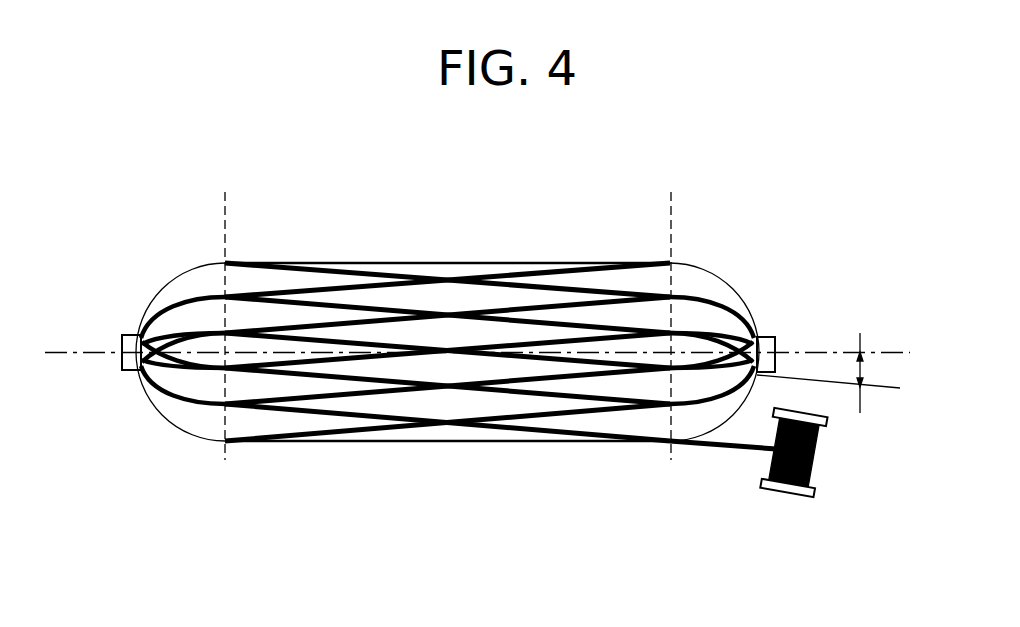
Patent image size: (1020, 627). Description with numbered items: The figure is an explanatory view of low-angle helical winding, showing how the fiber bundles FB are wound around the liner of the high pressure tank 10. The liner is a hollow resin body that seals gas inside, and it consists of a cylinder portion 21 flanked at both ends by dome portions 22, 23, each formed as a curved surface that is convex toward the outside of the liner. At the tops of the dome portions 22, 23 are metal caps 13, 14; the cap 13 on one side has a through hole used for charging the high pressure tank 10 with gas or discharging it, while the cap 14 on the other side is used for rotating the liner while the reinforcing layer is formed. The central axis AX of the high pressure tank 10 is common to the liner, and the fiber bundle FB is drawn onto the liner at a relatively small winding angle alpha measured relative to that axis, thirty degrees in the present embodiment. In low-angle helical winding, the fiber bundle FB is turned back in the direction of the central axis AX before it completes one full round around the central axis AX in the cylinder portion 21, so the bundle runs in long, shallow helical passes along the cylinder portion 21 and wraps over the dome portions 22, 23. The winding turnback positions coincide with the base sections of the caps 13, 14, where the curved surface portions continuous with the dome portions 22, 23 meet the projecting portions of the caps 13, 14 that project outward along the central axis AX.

The high pressure tank 10 is at (454, 311).
The cap 13 is at (108, 339).
The cap 14 is at (785, 340).
The cylinder portion 21 is at (670, 224).
The dome portion 22 is at (197, 280).
The dome portion 23 is at (750, 310).
The central axis AX is at (500, 354).
The fiber bundle FB is at (718, 448).
The winding angle alpha is at (828, 379).